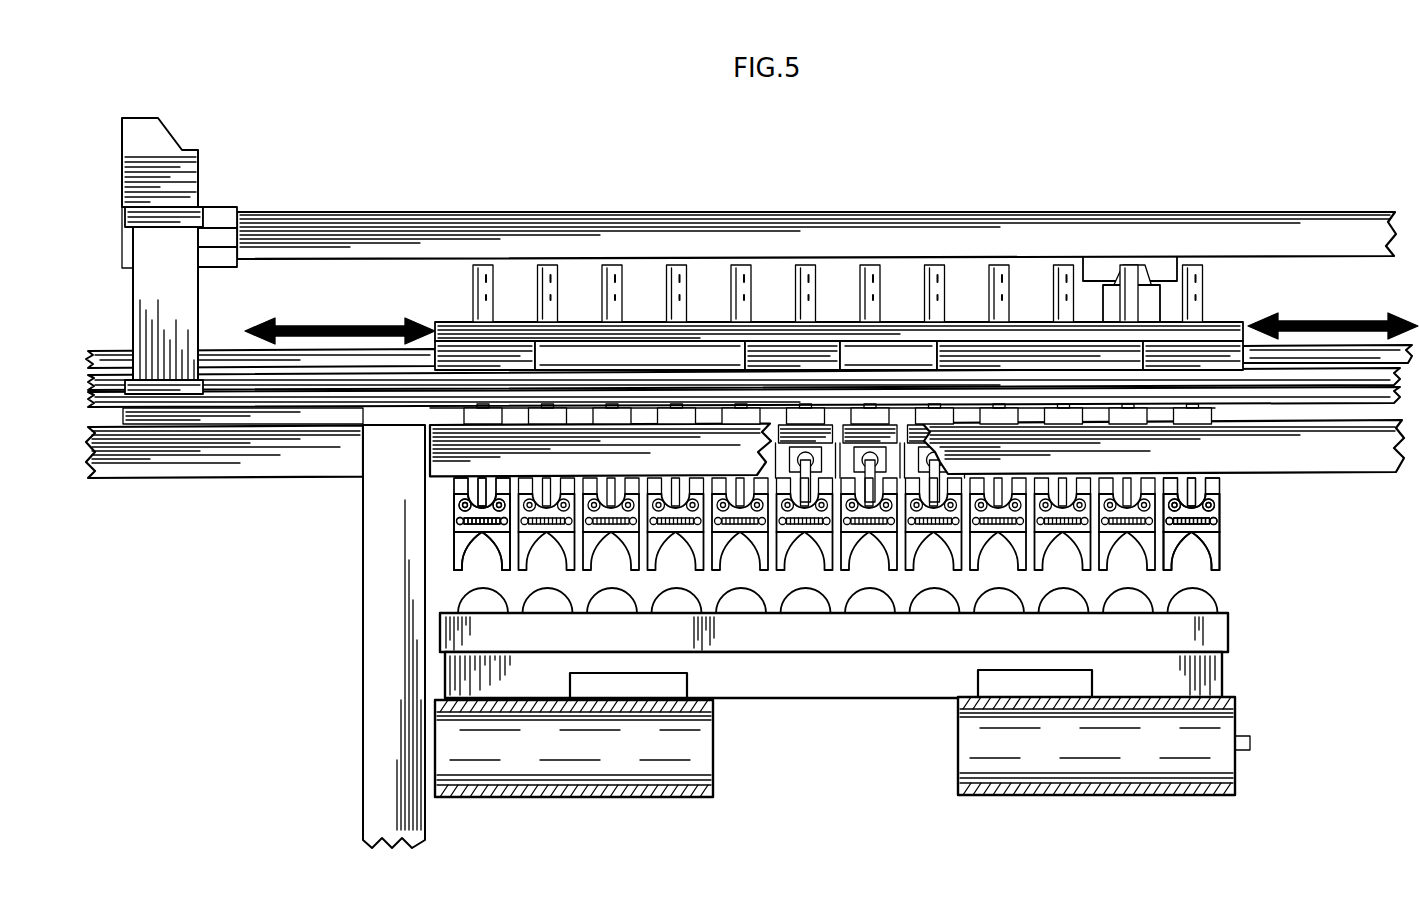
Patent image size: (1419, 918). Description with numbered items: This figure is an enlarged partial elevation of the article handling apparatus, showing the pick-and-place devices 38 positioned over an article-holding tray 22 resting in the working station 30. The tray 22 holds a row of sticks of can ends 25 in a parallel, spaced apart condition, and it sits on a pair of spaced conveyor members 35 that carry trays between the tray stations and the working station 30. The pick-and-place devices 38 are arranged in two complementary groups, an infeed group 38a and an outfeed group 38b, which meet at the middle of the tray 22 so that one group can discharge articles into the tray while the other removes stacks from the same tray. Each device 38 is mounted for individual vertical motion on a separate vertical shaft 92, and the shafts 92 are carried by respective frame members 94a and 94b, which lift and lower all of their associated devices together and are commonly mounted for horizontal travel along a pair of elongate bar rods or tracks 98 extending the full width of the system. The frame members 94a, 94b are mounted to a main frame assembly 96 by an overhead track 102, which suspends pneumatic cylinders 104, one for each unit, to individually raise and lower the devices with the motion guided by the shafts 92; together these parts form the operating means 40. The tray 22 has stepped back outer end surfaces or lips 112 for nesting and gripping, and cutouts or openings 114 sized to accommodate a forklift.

The article-holding tray 22 is at (1218, 632).
The sticks of can ends 25 is at (1196, 596).
The working station 30 is at (1297, 701).
The conveyor members 35 is at (590, 798).
The pick-and-place devices 38 is at (440, 547).
The infeed group of pick-and-place devices 38a is at (440, 502).
The outfeed group of pick-and-place devices 38b is at (1224, 492).
The operating means 40 is at (648, 160).
The vertical shafts 92 is at (478, 278).
The frame member 94a is at (435, 327).
The frame member 94b is at (1243, 330).
The main frame assembly 96 is at (797, 212).
The bar rods or tracks 98 is at (223, 352).
The overhead track 102 is at (160, 120).
The pneumatic cylinders 104 is at (1158, 265).
The steps or lips 112 is at (1222, 655).
The cutouts or openings 114 is at (667, 690).